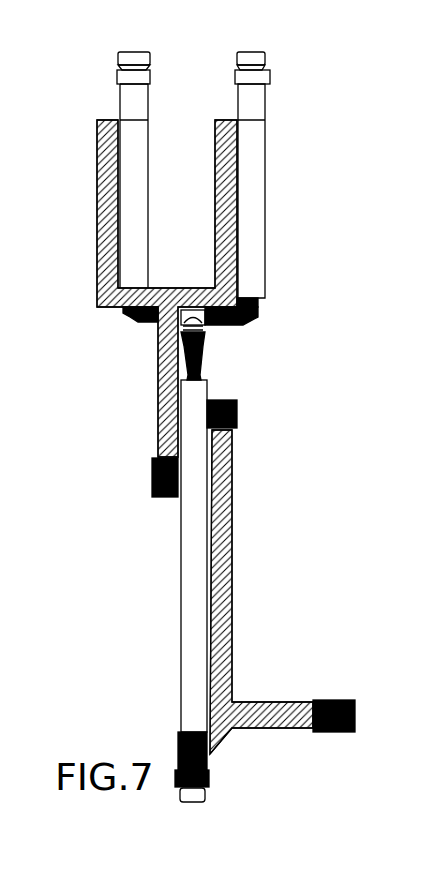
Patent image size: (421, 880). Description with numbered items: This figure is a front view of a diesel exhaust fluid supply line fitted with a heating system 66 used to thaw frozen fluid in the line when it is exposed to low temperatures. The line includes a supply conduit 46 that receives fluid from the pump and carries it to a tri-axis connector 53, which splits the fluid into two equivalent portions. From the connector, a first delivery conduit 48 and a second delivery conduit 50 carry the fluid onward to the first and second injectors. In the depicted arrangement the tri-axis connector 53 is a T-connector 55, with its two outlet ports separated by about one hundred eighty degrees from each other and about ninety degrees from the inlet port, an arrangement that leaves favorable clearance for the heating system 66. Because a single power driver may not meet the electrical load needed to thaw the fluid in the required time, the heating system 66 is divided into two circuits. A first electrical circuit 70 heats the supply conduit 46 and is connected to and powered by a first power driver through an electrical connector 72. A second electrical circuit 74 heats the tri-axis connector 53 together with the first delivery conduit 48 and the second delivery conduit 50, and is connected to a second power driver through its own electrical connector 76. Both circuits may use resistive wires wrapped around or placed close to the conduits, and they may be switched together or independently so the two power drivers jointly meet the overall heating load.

The supply conduit 46 is at (189, 632).
The first delivery conduit 48 is at (135, 155).
The second delivery conduit 50 is at (257, 178).
The tri-axis connector 53 is at (203, 325).
The T-connector 55 is at (203, 333).
The heating system 66 is at (303, 322).
The first electrical circuit 70 is at (232, 456).
The electrical connector 72 is at (333, 700).
The second electrical circuit 74 is at (97, 165).
The electrical connector 76 is at (152, 472).